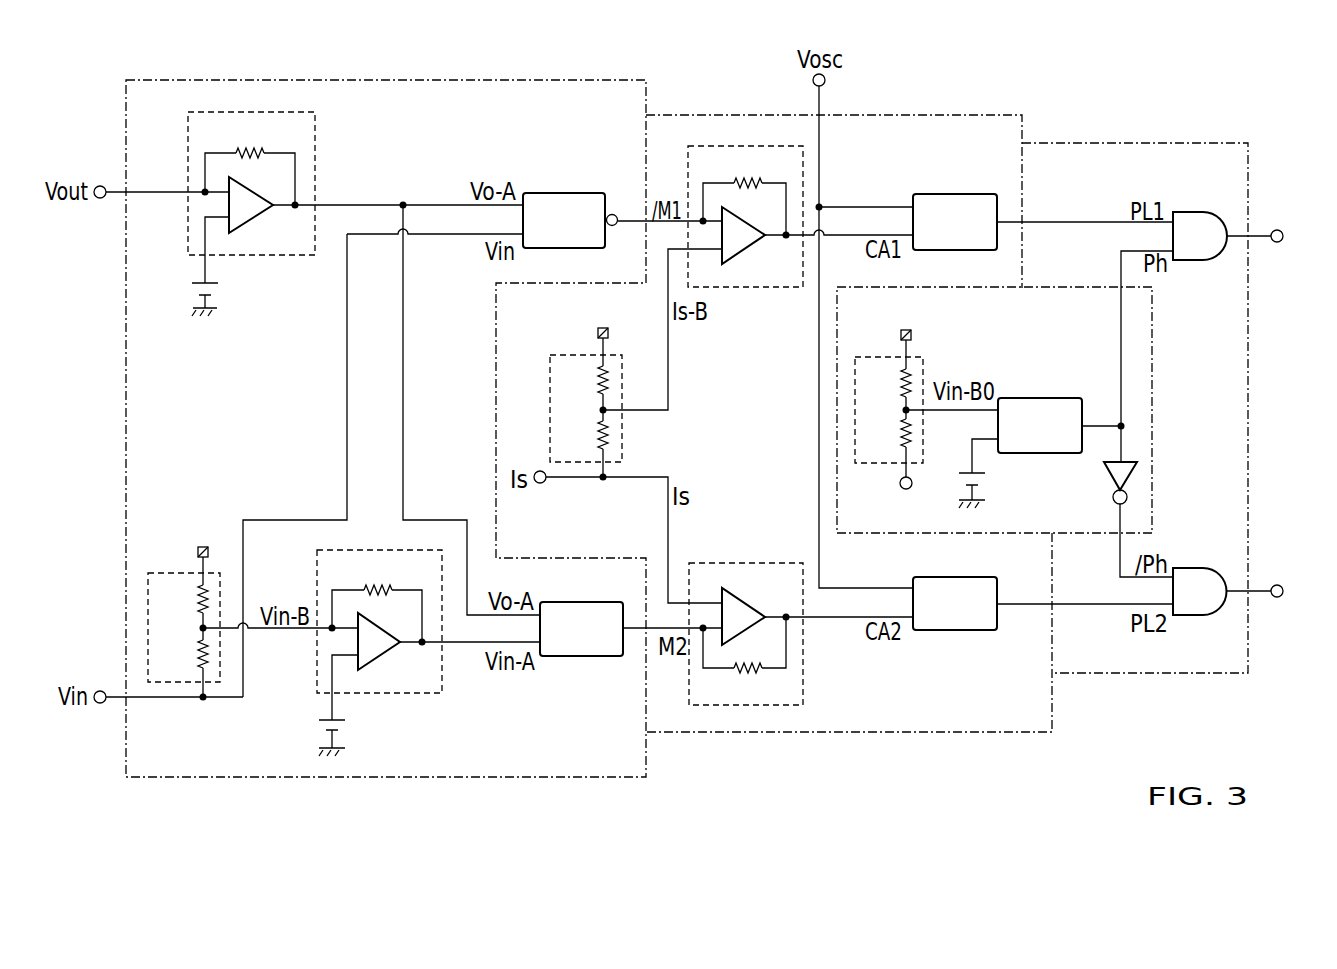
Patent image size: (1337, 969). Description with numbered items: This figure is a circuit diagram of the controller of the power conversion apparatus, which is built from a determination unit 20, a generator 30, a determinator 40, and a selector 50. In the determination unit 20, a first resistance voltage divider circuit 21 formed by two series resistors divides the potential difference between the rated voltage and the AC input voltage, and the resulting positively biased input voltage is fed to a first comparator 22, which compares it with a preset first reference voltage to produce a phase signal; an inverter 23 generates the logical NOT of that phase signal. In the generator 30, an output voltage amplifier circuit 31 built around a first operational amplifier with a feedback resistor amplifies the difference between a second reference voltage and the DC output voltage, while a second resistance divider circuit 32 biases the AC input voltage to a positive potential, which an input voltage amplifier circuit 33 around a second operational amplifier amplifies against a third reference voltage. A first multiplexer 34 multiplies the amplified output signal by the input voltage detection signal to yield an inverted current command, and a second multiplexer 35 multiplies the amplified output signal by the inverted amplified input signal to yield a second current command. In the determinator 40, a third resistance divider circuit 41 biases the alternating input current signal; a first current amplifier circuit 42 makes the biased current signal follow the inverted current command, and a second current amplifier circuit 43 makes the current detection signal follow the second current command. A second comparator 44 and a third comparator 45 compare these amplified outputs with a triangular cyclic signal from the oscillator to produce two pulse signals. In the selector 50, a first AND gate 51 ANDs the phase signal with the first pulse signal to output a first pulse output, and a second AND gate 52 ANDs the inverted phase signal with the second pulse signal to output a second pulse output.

The determination unit 20 is at (1153, 372).
The first resistance voltage divider circuit 21 is at (867, 356).
The first comparator 22 is at (1055, 397).
The inverter 23 is at (1105, 478).
The generator 30 is at (541, 79).
The output voltage amplifier circuit 31 is at (315, 137).
The second resistance divider circuit 32 is at (157, 572).
The input voltage amplifier circuit 33 is at (430, 694).
The first multiplexer 34 is at (571, 192).
The second multiplexer 35 is at (595, 657).
The determinator 40 is at (991, 113).
The third resistance divider circuit 41 is at (622, 440).
The first current amplifier circuit 42 is at (770, 288).
The second current amplifier circuit 43 is at (770, 562).
The second comparator 44 is at (963, 193).
The third comparator 45 is at (968, 632).
The selector 50 is at (1188, 142).
The first AND gate 51 is at (1195, 211).
The second AND gate 52 is at (1197, 567).